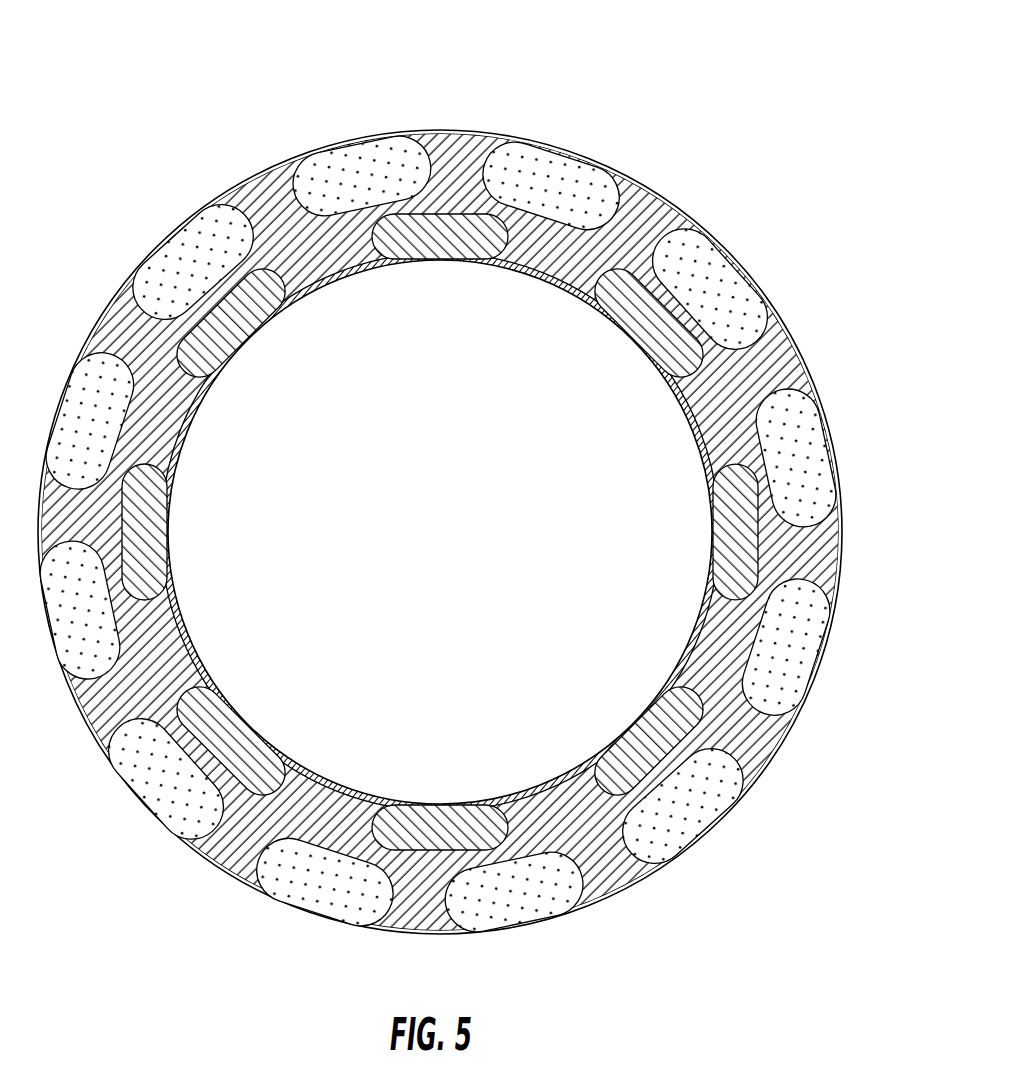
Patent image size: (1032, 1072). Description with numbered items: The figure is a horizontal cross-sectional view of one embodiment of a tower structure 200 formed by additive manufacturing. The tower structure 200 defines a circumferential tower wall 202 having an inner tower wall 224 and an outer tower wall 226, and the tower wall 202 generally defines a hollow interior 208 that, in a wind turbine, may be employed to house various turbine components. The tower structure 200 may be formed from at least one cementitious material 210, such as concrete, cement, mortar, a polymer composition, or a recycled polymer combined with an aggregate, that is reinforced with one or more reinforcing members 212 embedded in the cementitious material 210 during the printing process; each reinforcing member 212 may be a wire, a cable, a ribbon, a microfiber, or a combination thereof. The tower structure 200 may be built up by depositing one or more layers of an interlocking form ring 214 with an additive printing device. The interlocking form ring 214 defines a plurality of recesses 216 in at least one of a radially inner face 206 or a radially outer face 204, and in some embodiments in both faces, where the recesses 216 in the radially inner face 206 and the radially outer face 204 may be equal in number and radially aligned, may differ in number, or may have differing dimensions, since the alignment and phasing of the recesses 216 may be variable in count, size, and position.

The tower structure 200 is at (476, 515).
The circumferential tower wall 202 is at (859, 491).
The radially outer face 204 is at (790, 763).
The radially inner face 206 is at (660, 668).
The hollow interior 208 is at (597, 498).
The cementitious material 210 is at (684, 810).
The reinforcing member 212 is at (542, 910).
The interlocking form ring 214 is at (607, 866).
The recesses 216 is at (245, 766).
The inner tower wall 224 is at (257, 352).
The outer tower wall 226 is at (139, 246).